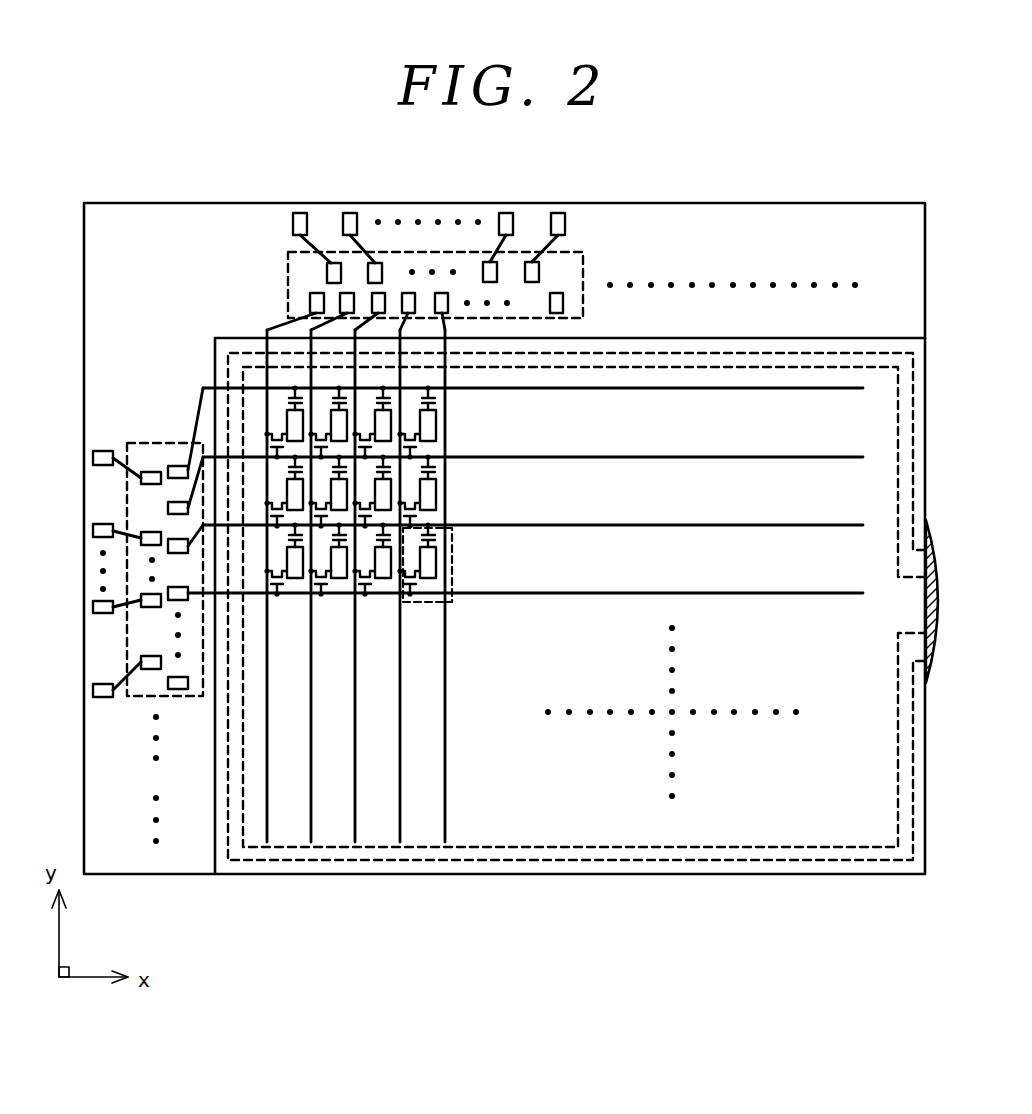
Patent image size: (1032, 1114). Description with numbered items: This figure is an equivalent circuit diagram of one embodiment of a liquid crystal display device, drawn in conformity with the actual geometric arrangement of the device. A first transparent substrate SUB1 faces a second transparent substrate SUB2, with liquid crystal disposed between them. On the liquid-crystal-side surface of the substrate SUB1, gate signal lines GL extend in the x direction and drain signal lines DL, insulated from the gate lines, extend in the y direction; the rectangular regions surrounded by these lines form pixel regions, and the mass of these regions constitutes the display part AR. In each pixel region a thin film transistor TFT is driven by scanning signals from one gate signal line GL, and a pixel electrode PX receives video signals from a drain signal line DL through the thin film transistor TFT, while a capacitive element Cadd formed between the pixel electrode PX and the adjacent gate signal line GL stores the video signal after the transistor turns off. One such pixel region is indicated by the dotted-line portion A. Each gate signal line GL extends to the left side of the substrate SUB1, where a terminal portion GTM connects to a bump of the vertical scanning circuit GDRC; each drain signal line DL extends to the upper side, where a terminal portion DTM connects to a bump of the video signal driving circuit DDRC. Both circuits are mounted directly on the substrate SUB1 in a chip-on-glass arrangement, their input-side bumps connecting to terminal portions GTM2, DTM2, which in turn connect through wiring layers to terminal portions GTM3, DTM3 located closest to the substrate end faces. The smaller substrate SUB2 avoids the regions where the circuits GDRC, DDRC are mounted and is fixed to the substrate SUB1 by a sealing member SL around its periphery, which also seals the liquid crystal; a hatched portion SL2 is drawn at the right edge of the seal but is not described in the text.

The first transparent substrate SUB1 is at (135, 877).
The second transparent substrate SUB2 is at (221, 874).
The sealing member SL is at (425, 852).
The liquid crystal sealing portion SL2 is at (928, 606).
The display part AR is at (647, 775).
The semiconductor integrated circuit (video signal driving circuit) DDRC is at (584, 265).
The terminal portion DTM is at (310, 300).
The terminal portion DTM2 is at (327, 274).
The terminal portion DTM3 is at (293, 222).
The semiconductor integrated circuit (vertical scanning circuit) GDRC is at (141, 700).
The terminal portion GTM is at (180, 466).
The terminal portion GTM2 is at (149, 472).
The terminal portion GTM3 is at (102, 450).
The drain signal line DL is at (268, 828).
The gate signal line GL is at (842, 523).
The pixel electrode PX is at (438, 493).
The capacitive element Cadd is at (440, 469).
The thin film transistor TFT is at (415, 509).
The portion A is at (452, 568).